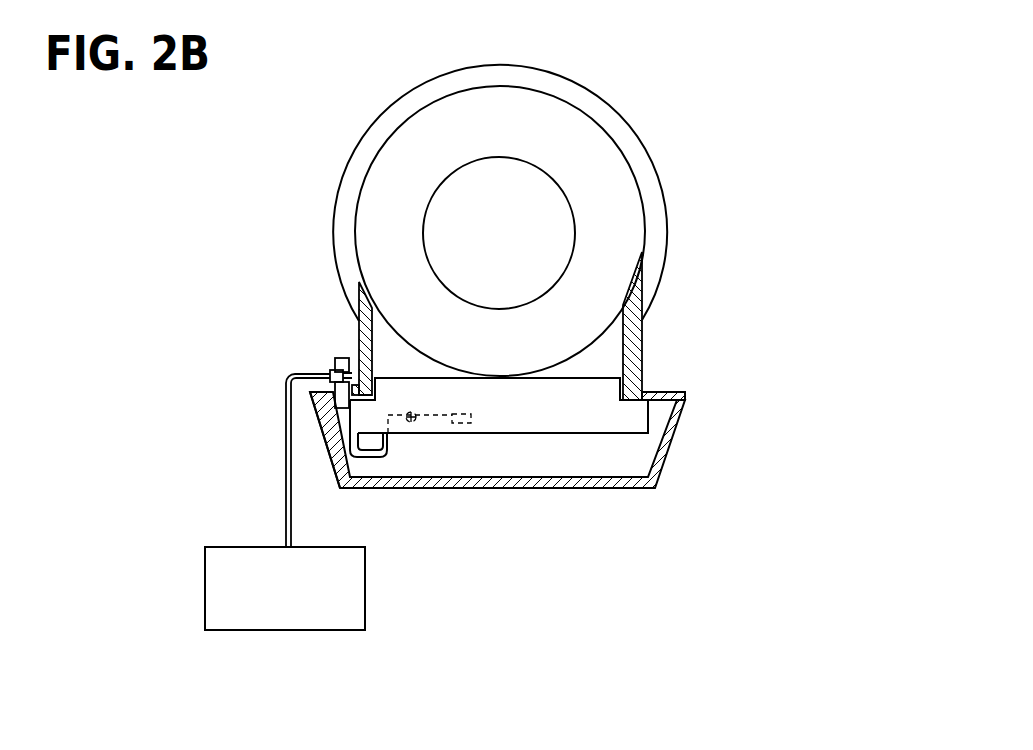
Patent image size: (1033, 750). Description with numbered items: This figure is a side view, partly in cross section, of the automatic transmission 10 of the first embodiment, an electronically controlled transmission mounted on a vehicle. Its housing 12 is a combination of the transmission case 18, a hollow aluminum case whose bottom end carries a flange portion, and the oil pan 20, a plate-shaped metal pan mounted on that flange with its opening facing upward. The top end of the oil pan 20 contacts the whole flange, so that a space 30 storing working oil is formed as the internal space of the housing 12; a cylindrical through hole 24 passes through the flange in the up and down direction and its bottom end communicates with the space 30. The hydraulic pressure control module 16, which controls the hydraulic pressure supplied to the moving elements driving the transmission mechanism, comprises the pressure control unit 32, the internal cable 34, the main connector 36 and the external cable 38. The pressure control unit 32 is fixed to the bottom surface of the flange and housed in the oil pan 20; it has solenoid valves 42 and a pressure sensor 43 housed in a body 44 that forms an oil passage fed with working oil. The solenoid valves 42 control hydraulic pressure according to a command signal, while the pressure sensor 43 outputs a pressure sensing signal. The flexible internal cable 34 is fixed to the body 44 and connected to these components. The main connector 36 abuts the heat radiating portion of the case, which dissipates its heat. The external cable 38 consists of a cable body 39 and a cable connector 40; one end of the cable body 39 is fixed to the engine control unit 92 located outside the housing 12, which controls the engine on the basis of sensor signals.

The automatic transmission 10 is at (635, 106).
The housing 12 is at (568, 384).
The hydraulic pressure control module 16 is at (663, 437).
The transmission case 18 is at (645, 379).
The oil pan 20 is at (548, 411).
The through hole 24 is at (328, 448).
The space 30 is at (612, 455).
The pressure control unit 32 is at (481, 513).
The internal cable 34 is at (368, 457).
The main connector 36 is at (342, 360).
The external cable 38 is at (285, 407).
The cable body 39 is at (292, 374).
The cable connector 40 is at (331, 373).
The solenoid valve 42 is at (411, 423).
The pressure sensor 43 is at (462, 423).
The body 44 is at (566, 425).
The engine control unit 92 is at (365, 588).